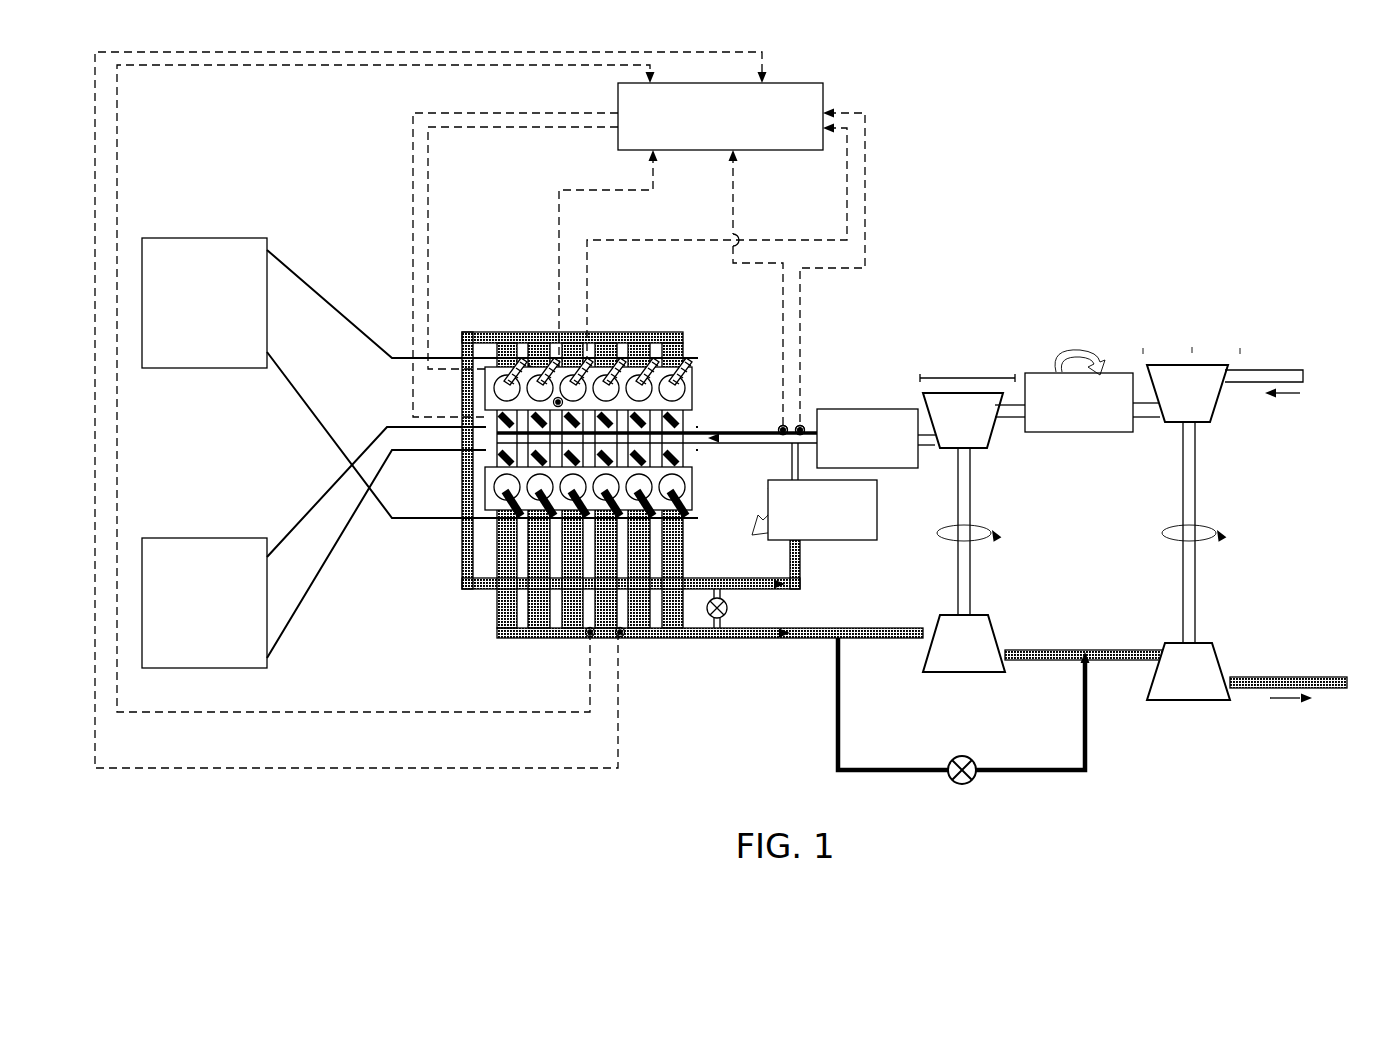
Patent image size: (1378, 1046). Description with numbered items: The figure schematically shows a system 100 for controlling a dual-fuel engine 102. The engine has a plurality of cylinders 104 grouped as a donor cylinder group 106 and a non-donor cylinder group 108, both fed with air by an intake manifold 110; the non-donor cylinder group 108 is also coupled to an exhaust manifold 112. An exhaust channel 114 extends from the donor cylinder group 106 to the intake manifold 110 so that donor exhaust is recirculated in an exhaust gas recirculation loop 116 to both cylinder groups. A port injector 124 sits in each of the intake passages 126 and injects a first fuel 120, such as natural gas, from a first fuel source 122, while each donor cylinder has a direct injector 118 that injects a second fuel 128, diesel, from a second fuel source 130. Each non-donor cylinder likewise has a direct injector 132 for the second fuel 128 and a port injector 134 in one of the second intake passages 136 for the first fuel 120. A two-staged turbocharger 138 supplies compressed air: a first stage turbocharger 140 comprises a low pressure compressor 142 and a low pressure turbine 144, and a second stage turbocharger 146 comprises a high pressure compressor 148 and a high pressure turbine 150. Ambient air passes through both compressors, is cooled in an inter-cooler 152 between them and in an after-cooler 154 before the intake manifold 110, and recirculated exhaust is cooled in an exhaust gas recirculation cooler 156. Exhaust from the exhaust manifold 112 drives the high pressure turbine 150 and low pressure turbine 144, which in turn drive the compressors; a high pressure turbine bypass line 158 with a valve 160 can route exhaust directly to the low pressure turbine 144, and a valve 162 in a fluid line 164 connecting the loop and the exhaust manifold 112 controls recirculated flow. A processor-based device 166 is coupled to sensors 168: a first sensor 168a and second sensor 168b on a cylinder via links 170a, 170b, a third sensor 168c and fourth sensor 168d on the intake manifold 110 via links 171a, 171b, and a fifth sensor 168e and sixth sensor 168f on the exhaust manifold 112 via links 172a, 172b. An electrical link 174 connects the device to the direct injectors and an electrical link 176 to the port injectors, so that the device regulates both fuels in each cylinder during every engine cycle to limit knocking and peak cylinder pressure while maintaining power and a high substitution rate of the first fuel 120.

The system 100 is at (1280, 118).
The dual-fuel engine 102 is at (635, 482).
The cylinders 104 is at (493, 455).
The donor cylinder group 106 is at (693, 366).
The non-donor cylinder group 108 is at (692, 497).
The intake manifold 110 is at (705, 420).
The exhaust manifold 112 is at (705, 640).
The exhaust channel 114 is at (493, 340).
The exhaust gas recirculation loop 116 is at (460, 570).
The direct injector 118 is at (686, 343).
The first fuel 120 is at (315, 498).
The first fuel source 122 is at (205, 538).
The port injector 124 is at (692, 390).
The intake passages 126 is at (686, 433).
The second fuel 128 is at (325, 300).
The second fuel source 130 is at (205, 238).
The direct injector 132 is at (700, 515).
The port injector 134 is at (686, 458).
The second intake passages 136 is at (690, 445).
The two-staged turbocharger 138 is at (1243, 583).
The first stage turbocharger 140 is at (1191, 334).
The low pressure compressor 142 is at (1220, 410).
The low pressure turbine 144 is at (1222, 656).
The second stage turbocharger 146 is at (962, 376).
The high pressure compressor 148 is at (990, 442).
The high pressure turbine 150 is at (992, 625).
The inter-cooler 152 is at (1092, 432).
The after-cooler 154 is at (875, 409).
The exhaust gas recirculation cooler 156 is at (865, 543).
The high pressure turbine bypass line 158 is at (872, 768).
The valve 160 is at (962, 755).
The valve 162 is at (728, 610).
The fluid line 164 is at (735, 640).
The processor-based device 166 is at (823, 92).
The sensors 168 is at (803, 420).
The first sensor 168a is at (553, 395).
The second sensor 168b is at (493, 487).
The third sensor 168c is at (806, 398).
The fourth sensor 168d is at (778, 415).
The fifth sensor 168e is at (588, 640).
The sixth sensor 168f is at (622, 640).
The link 170a is at (559, 206).
The link 170b is at (847, 212).
The link 171a is at (865, 190).
The link 171b is at (733, 215).
The link 172a is at (352, 712).
The link 172b is at (405, 770).
The electrical link 174 is at (428, 238).
The electrical link 176 is at (413, 164).